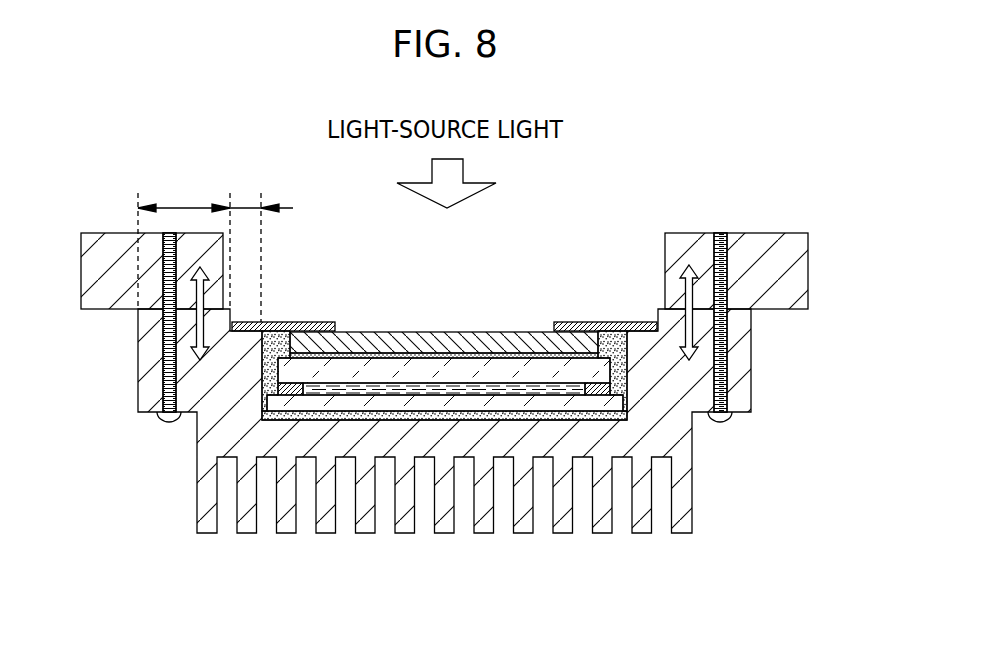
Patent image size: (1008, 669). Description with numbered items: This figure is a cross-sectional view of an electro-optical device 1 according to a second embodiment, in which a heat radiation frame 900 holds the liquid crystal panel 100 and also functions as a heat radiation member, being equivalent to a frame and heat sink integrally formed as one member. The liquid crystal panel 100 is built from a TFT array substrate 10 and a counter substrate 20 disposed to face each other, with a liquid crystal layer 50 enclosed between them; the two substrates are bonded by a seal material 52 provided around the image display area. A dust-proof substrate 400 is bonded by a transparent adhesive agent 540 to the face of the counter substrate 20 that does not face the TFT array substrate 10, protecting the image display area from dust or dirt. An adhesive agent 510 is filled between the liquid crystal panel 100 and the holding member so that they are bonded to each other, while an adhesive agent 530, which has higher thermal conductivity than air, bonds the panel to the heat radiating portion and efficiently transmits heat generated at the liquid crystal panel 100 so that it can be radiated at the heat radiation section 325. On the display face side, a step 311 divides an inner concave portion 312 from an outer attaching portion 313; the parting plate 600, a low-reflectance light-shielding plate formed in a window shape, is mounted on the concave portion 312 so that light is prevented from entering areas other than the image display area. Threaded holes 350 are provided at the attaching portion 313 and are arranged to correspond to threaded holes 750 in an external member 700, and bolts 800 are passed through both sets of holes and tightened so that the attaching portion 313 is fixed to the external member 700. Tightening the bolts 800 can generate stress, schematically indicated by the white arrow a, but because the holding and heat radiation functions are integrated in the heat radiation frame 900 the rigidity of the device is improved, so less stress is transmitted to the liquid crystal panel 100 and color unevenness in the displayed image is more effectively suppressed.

The electro-optical device 1 is at (740, 150).
The TFT array substrate 10 is at (400, 403).
The counter substrate 20 is at (482, 372).
The liquid crystal layer 50 is at (442, 386).
The seal material 52 is at (284, 382).
The liquid crystal panel 100 is at (527, 598).
The step 311 is at (238, 320).
The concave portion 312 is at (244, 200).
The attaching portion 313 is at (183, 200).
The heat radiation section 325 is at (360, 566).
The threaded hole 350 is at (163, 362).
The dust-proof substrate 400 is at (502, 332).
The adhesive agent 510 is at (615, 333).
The adhesive agent 530 is at (600, 421).
The transparent adhesive agent 540 is at (465, 354).
The parting plate 600 is at (582, 322).
The external member 700 is at (108, 235).
The threaded hole 750 is at (164, 270).
The bolt 800 is at (163, 422).
The heat radiation frame 900 is at (680, 418).
The white arrow a is at (205, 270).